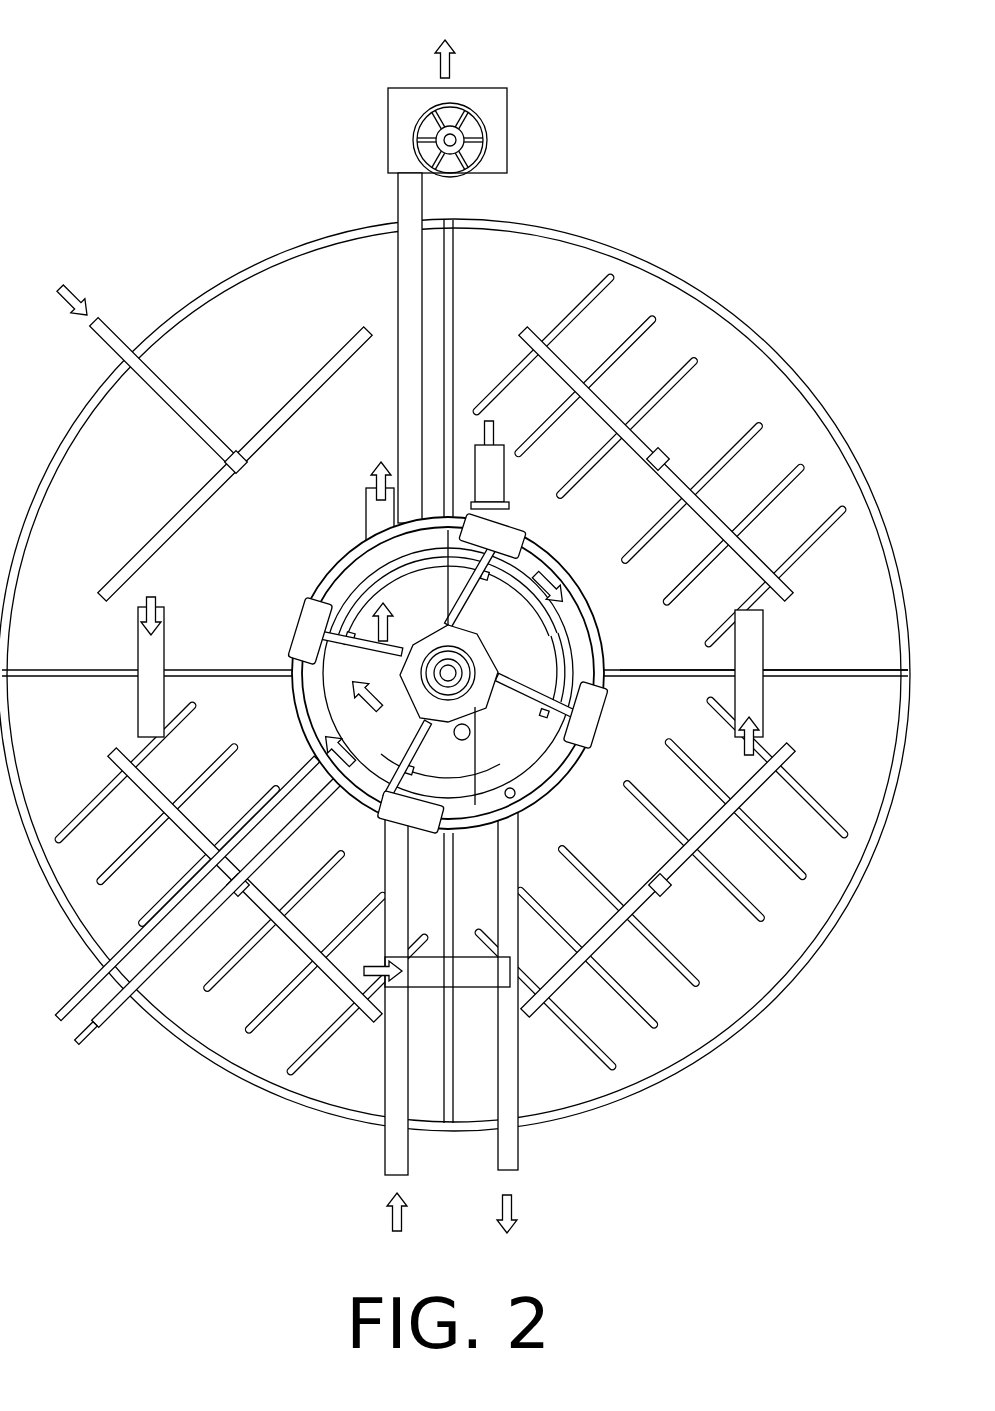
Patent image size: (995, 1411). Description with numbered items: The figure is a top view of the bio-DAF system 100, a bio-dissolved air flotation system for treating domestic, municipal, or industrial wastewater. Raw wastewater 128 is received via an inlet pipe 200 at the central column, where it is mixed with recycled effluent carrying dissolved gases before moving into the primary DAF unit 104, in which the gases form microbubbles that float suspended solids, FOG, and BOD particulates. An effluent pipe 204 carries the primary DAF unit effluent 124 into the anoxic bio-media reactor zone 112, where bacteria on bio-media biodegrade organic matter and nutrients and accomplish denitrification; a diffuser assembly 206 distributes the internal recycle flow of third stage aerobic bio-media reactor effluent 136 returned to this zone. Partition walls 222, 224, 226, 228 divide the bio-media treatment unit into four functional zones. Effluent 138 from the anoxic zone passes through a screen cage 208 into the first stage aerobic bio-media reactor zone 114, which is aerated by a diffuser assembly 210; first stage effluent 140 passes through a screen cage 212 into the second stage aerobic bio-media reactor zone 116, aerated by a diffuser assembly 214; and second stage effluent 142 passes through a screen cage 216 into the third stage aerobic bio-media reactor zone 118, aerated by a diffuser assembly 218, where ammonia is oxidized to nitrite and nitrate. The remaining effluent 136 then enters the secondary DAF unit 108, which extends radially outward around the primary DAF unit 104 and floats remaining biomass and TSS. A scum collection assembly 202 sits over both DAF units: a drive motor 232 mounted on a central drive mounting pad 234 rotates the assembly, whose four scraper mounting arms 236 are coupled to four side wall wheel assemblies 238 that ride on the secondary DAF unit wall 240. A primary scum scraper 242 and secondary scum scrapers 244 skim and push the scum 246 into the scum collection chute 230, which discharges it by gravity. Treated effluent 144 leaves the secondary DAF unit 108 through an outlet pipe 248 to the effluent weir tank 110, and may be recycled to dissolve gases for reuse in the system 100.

The bio-DAF system 100 is at (150, 42).
The effluent weir tank 110 is at (403, 72).
The treated effluent 144 is at (466, 34).
The third stage aerobic bio-media reactor effluent 136 is at (54, 282).
The diffuser assembly 206 is at (133, 311).
The anoxic bio-media reactor zone 112 is at (260, 366).
The outlet pipe 248 is at (384, 278).
The partition wall 222 is at (464, 309).
The diffuser assembly 218 is at (766, 302).
The primary DAF unit effluent 124 is at (369, 479).
The effluent pipe 204 is at (364, 520).
The scum collection assembly 202 is at (304, 601).
The secondary DAF unit 108 is at (447, 559).
The primary DAF unit 104 is at (442, 619).
The partition wall 224 is at (40, 658).
The anoxic bio-media reactor zone effluent 138 is at (141, 599).
The screen cage 208 is at (171, 632).
The secondary DAF unit wall 240 is at (286, 694).
The first stage aerobic bio-media reactor zone 114 is at (77, 739).
The third stage aerobic bio-media reactor zone 118 is at (670, 651).
The central drive mounting pad 234 is at (494, 636).
The scraper mounting arms 236 is at (529, 681).
The drive motor 232 is at (489, 685).
The side wall wheel assemblies 238 is at (613, 737).
The screen cage 216 is at (777, 648).
The partition wall 228 is at (821, 690).
The second stage aerobic bio-media reactor effluent 142 is at (735, 743).
The primary scum scraper 242 is at (446, 749).
The secondary scum scrapers 244 is at (440, 823).
The second stage aerobic bio-media reactor zone 116 is at (639, 857).
The partition wall 226 is at (461, 888).
The first stage aerobic bio-media reactor effluent 140 is at (372, 956).
The diffuser assembly 210 is at (163, 979).
The diffuser assembly 214 is at (646, 995).
The screen cage 212 is at (474, 997).
The scum collection chute 230 is at (538, 1156).
The inlet pipe 200 is at (372, 1161).
The raw wastewater 128 is at (418, 1273).
The scum 246 is at (528, 1273).